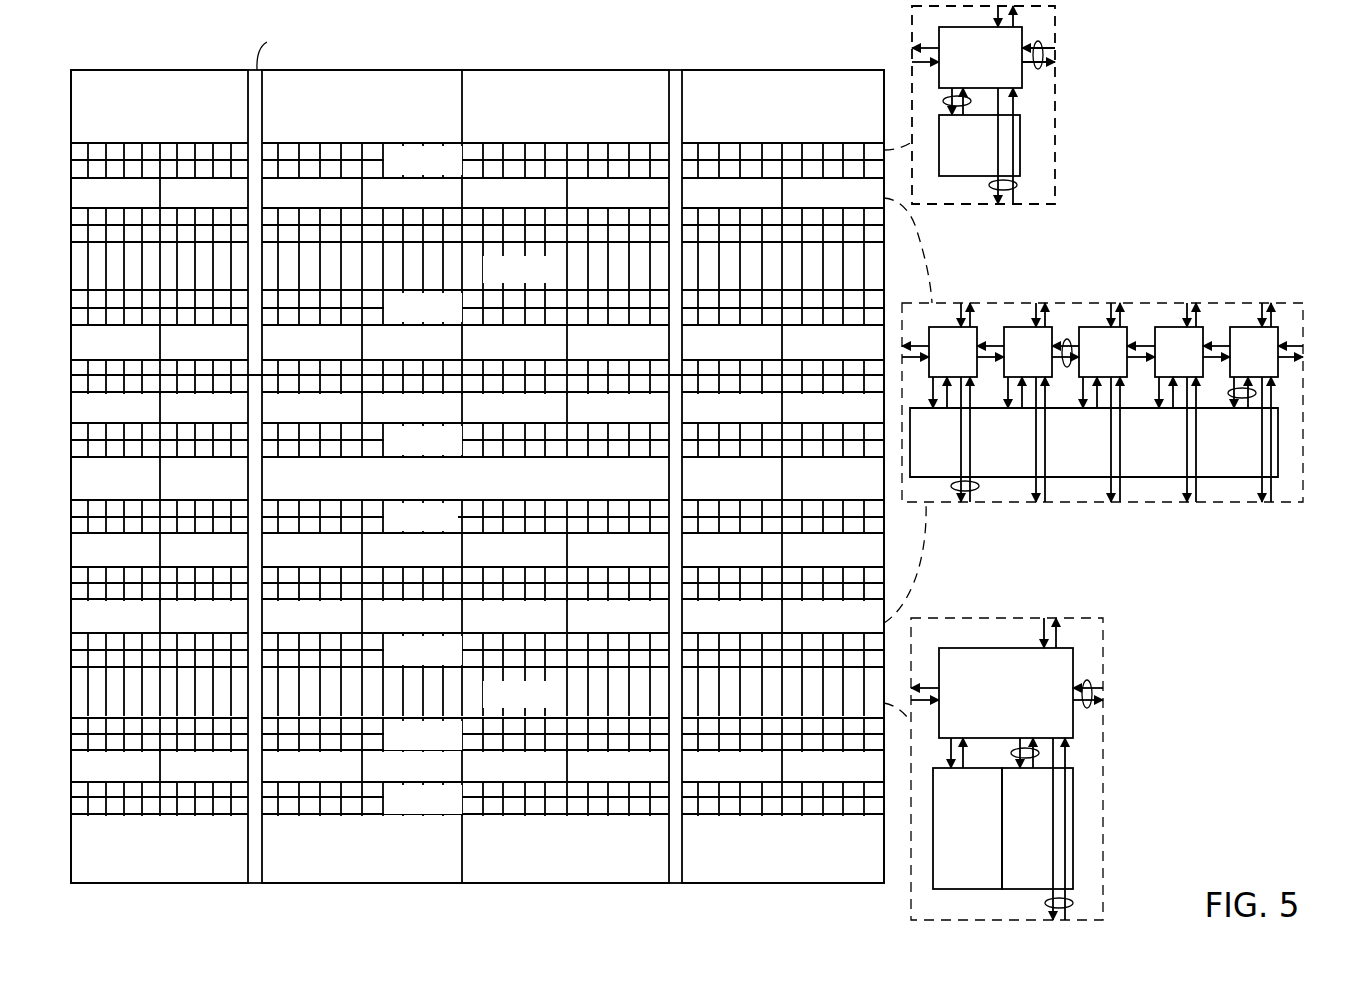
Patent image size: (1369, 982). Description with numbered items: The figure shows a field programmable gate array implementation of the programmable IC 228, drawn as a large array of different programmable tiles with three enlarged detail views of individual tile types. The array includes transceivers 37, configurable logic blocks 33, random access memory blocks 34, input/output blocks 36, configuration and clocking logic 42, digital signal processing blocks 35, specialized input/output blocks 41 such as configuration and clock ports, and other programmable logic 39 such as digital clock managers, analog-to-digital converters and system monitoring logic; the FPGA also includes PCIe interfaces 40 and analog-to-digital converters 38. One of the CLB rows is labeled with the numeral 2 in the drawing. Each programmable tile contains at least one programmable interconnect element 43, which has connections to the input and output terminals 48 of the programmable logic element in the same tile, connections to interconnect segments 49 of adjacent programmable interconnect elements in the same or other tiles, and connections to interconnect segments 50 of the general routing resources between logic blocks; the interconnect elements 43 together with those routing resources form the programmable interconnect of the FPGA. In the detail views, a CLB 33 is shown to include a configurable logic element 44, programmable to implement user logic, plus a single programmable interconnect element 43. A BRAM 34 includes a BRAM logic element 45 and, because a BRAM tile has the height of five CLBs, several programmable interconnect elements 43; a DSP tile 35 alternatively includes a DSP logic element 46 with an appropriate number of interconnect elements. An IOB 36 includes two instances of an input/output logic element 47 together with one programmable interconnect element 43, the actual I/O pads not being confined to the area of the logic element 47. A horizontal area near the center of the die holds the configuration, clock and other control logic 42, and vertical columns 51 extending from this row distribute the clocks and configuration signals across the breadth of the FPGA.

The configurable logic blocks 2 is at (476, 517).
The configurable logic blocks 33 is at (1078, 115).
The random access memory blocks 34 is at (1163, 268).
The digital signal processing blocks 35 is at (471, 512).
The input/output blocks 36 is at (1125, 812).
The transceivers 37 is at (372, 476).
The analog-to-digital converters 38 is at (557, 849).
The other programmable logic 39 is at (473, 478).
The PCIe interfaces 40 is at (566, 107).
The specialized input/output blocks 41 is at (468, 479).
The configuration and clocking logic 42 is at (468, 479).
The programmable interconnect element 43 is at (1103, 382).
The configurable logic element 44 is at (979, 145).
The BRAM logic element 45 is at (1035, 442).
The DSP logic element 46 is at (1211, 442).
The input/output logic element 47 is at (1003, 828).
The input and output terminals 48 is at (950, 107).
The interconnect segments 49 is at (1041, 44).
The interconnect segments 50 is at (1015, 186).
The vertical columns 51 is at (676, 70).
The programmable IC 228 is at (1168, 146).